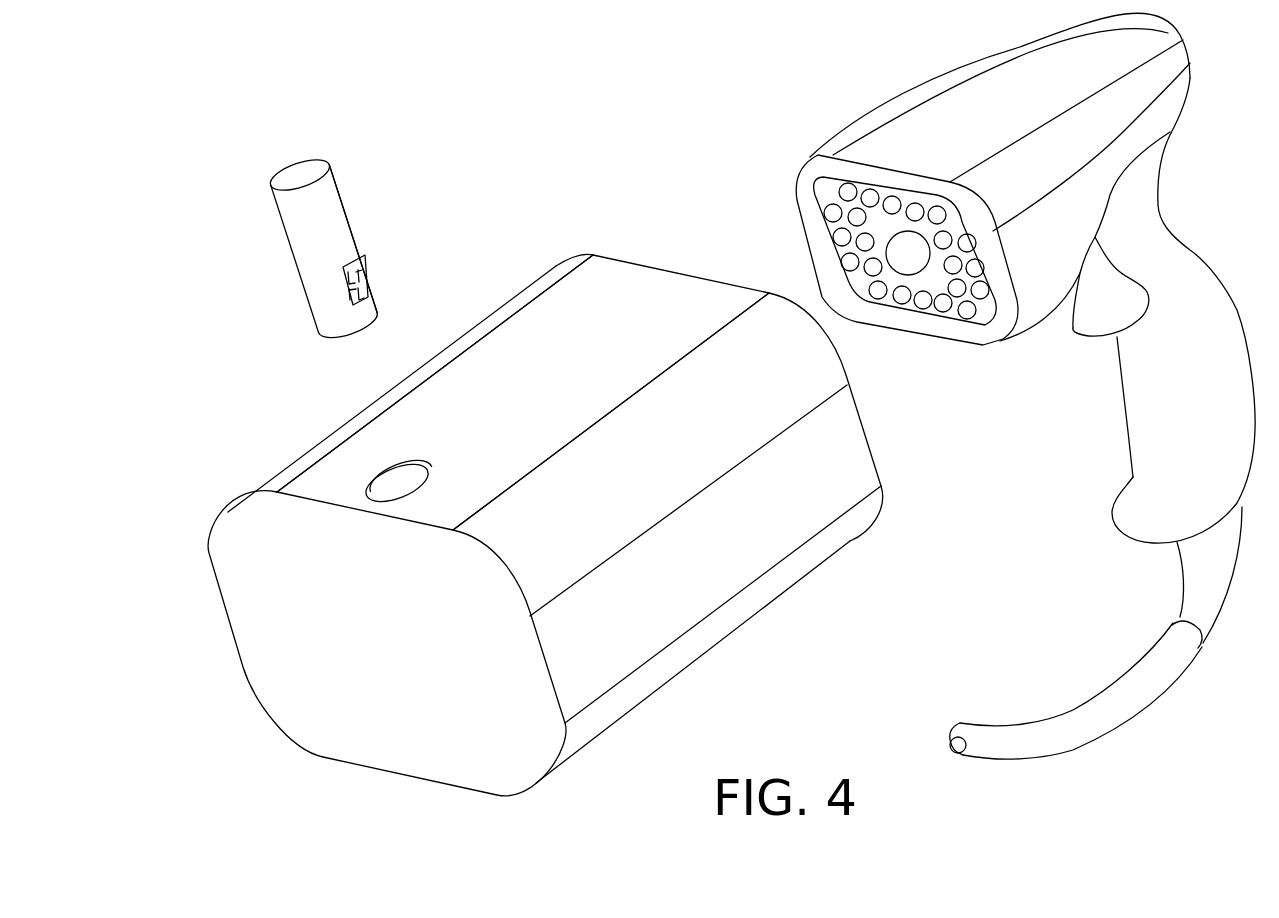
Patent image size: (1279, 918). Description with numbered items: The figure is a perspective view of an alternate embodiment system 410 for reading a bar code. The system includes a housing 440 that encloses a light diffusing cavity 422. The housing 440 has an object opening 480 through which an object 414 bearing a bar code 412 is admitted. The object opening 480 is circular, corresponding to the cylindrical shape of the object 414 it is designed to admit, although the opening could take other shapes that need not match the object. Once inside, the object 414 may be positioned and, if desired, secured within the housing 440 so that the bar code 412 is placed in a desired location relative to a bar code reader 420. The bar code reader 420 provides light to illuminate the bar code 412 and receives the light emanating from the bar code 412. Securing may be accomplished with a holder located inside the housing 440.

The system 410 is at (225, 183).
The bar code 412 is at (363, 273).
The object 414 is at (347, 205).
The bar code reader 420 is at (872, 103).
The light diffusing cavity 422 is at (207, 357).
The housing 440 is at (380, 378).
The object opening 480 is at (370, 480).